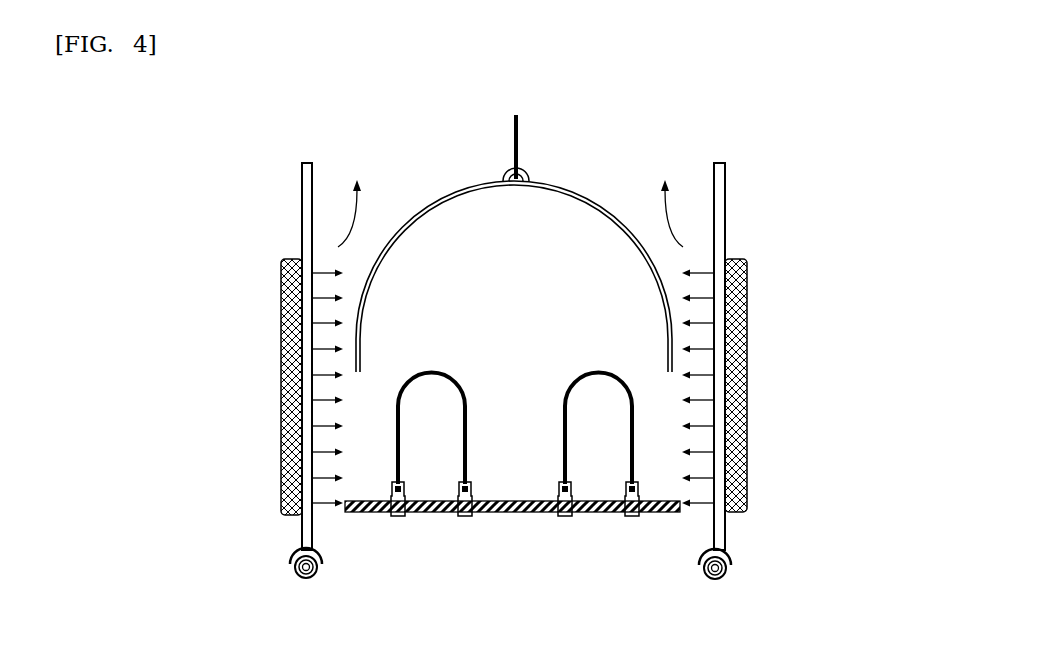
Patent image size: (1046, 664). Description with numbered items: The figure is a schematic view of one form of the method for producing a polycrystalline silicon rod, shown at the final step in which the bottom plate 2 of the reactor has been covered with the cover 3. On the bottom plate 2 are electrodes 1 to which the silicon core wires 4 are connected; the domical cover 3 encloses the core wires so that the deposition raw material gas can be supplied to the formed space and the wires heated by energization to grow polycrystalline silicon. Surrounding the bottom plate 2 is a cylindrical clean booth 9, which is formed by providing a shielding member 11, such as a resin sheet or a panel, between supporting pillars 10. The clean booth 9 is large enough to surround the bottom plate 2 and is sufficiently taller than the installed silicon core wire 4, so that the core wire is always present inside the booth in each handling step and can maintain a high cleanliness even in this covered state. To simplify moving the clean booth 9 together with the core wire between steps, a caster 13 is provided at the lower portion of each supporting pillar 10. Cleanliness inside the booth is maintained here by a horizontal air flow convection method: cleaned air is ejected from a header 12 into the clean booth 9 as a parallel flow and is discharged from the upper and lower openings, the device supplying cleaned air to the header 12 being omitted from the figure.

The electrode 1 is at (637, 495).
The bottom plate 2 is at (677, 504).
The cover 3 is at (627, 210).
The silicon core wire 4 is at (632, 385).
The clean booth 9 is at (300, 198).
The supporting pillar 10 is at (725, 235).
The shielding member 11 is at (697, 203).
The header 12 is at (293, 397).
The caster 13 is at (730, 550).